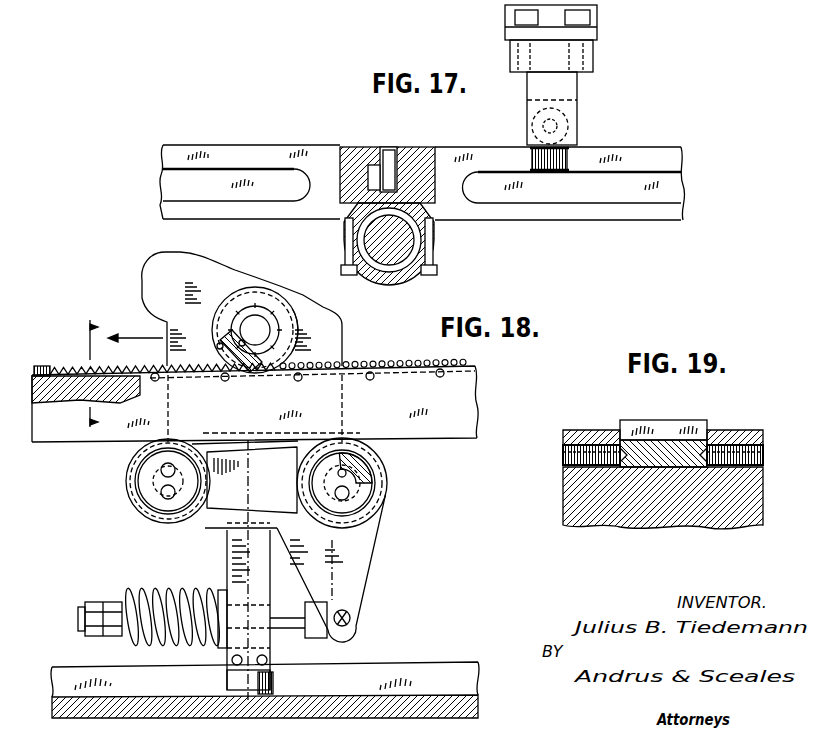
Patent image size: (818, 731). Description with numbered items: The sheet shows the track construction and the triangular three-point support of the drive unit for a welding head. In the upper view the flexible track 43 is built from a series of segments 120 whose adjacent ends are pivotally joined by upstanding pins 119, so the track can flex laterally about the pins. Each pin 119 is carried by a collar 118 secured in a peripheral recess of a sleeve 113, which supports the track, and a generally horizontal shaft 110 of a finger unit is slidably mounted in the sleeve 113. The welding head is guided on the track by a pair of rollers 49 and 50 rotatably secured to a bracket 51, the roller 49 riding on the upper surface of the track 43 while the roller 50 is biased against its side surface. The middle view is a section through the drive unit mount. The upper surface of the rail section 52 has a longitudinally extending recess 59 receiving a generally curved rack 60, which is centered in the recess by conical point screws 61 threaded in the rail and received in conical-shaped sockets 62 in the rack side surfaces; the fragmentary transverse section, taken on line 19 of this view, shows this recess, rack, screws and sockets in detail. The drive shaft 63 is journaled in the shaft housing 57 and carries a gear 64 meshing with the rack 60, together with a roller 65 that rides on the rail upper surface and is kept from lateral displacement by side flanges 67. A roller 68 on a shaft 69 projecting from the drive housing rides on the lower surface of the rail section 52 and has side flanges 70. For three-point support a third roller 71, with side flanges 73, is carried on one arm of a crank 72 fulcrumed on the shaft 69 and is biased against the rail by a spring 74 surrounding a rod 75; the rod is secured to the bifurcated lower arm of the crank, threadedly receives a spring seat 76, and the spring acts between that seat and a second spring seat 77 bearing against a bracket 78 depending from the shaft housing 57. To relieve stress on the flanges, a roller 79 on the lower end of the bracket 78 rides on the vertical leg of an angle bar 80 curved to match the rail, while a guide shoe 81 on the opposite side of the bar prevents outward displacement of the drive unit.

In FIG. 17, the track segment 120 is at (235, 145).
In FIG. 17, the upstanding pin 119 is at (391, 148).
In FIG. 17, the bracket 51 is at (594, 65).
In FIG. 17, the roller 49 is at (569, 118).
In FIG. 17, the roller 50 is at (571, 158).
In FIG. 17, the flexible track 43 is at (655, 147).
In FIG. 17, the collar 118 is at (440, 234).
In FIG. 17, the horizontal shaft 110 is at (385, 272).
In FIG. 17, the sleeve 113 is at (409, 270).
In FIG. 18, the shaft housing 57 is at (142, 274).
In FIG. 18, the drive shaft 63 is at (258, 316).
In FIG. 18, the roller 65 is at (286, 308).
In FIG. 18, the side flange 67 is at (299, 330).
In FIG. 18, the gear 64 is at (222, 343).
In FIG. 18, the section line 19- 19 is at (82, 371).
In FIG. 18, the rail section 52 is at (477, 400).
In FIG. 19, the rail section 52 is at (563, 501).
In FIG. 18, the conical-shaped socket 62 is at (88, 373).
In FIG. 19, the conical-shaped socket 62 is at (628, 440).
In FIG. 18, the longitudinally extending recess 59 is at (43, 366).
In FIG. 19, the longitudinally extending recess 59 is at (612, 431).
In FIG. 18, the conical point screw 61 is at (225, 382).
In FIG. 19, the conical point screw 61 is at (563, 460).
In FIG. 19, the curved rack 60 is at (665, 424).
In FIG. 18, the third roller 71 is at (126, 471).
In FIG. 18, the side flange 73 is at (134, 497).
In FIG. 18, the crank 72 is at (182, 520).
In FIG. 18, the side flange 70 is at (386, 500).
In FIG. 18, the roller 68 is at (379, 470).
In FIG. 18, the shaft 69 is at (375, 478).
In FIG. 18, the bracket 78 is at (228, 572).
In FIG. 18, the guide shoe 81 is at (227, 679).
In FIG. 18, the roller 79 is at (276, 688).
In FIG. 18, the rod 75 is at (296, 638).
In FIG. 18, the spring 74 is at (155, 590).
In FIG. 18, the second spring seat 77 is at (222, 649).
In FIG. 18, the spring seat 76 is at (112, 602).
In FIG. 18, the angle bar 80 is at (384, 663).